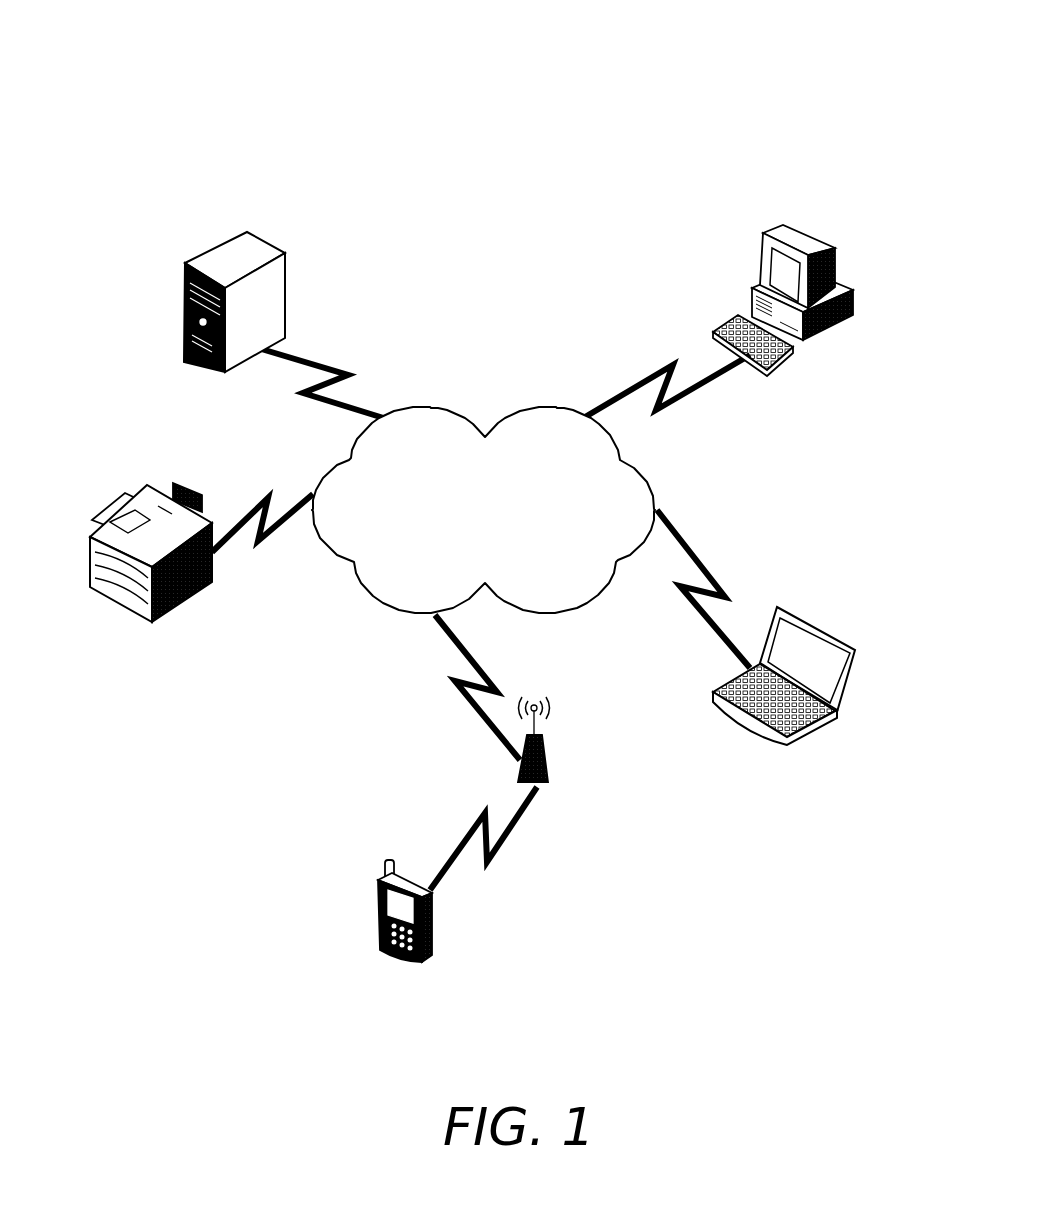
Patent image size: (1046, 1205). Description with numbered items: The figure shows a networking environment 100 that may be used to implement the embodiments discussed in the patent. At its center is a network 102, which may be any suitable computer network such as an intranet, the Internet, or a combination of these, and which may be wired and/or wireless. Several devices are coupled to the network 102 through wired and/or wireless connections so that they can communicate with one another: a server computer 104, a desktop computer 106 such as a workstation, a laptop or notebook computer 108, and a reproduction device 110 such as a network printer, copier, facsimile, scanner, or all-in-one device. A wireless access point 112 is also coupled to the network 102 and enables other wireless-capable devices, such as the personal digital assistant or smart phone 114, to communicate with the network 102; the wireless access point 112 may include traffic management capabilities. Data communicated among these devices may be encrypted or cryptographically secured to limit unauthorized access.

The networking environment 100 is at (786, 112).
The network 102 is at (467, 533).
The server computer 104 is at (291, 292).
The desktop computer 106 is at (755, 294).
The laptop computer 108 is at (837, 656).
The reproduction device 110 is at (126, 590).
The wireless access point 112 is at (460, 739).
The smart phone 114 is at (468, 937).